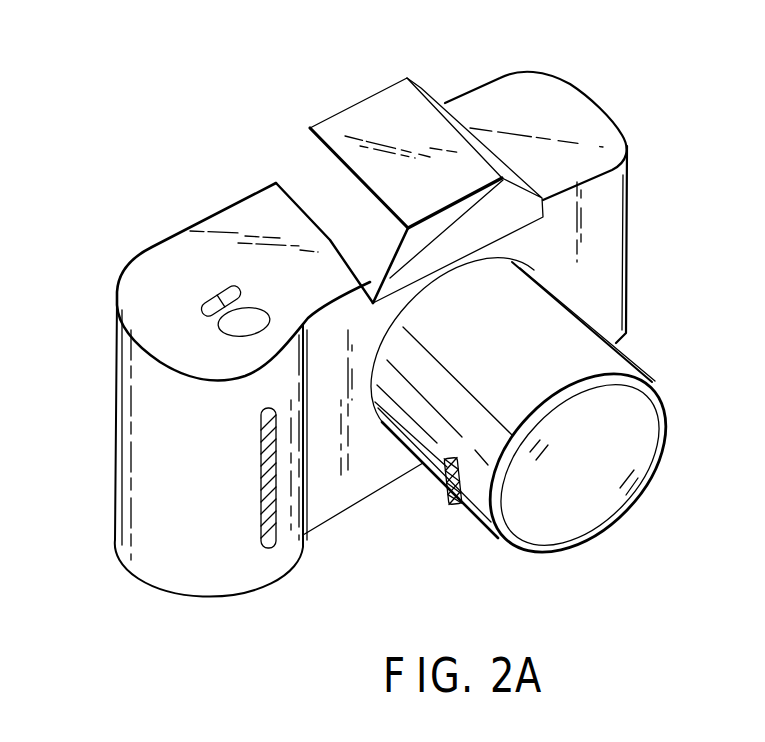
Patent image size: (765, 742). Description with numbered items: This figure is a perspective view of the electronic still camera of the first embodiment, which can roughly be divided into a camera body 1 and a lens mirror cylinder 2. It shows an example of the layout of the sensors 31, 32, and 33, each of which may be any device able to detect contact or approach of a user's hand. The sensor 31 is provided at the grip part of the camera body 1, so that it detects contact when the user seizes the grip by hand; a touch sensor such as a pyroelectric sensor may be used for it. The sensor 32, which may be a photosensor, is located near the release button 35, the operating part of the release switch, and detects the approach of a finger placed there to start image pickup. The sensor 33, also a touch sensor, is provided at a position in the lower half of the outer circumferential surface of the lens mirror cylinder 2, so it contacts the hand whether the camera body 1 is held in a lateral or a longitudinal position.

The camera body 1 is at (578, 115).
The lens mirror cylinder 2 is at (605, 358).
The sensor 31 is at (267, 557).
The sensor 32 is at (212, 282).
The sensor 33 is at (448, 503).
The release button 35 is at (235, 328).